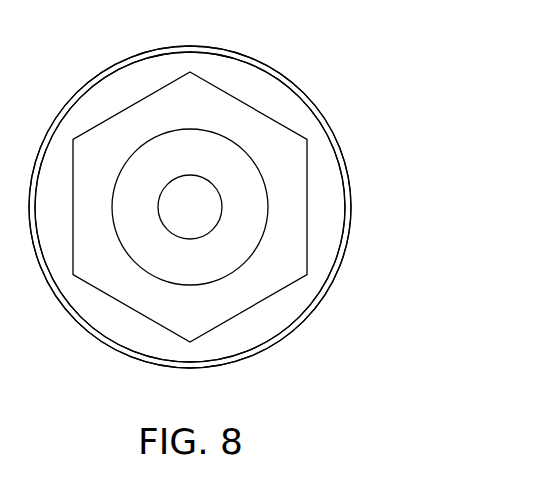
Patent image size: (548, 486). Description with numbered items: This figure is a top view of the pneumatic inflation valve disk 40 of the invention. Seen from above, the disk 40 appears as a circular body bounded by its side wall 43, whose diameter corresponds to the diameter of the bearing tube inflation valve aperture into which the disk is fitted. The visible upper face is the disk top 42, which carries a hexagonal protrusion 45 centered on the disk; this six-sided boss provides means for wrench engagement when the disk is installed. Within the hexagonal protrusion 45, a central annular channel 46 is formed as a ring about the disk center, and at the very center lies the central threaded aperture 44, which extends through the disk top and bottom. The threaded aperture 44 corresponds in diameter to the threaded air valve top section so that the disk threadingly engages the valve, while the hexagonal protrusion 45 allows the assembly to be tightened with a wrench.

The disk 40 is at (386, 87).
The top 42 is at (275, 317).
The side wall 43 is at (352, 213).
The central threaded aperture 44 is at (212, 219).
The hexagonal protrusion 45 is at (200, 98).
The central annular channel 46 is at (145, 260).